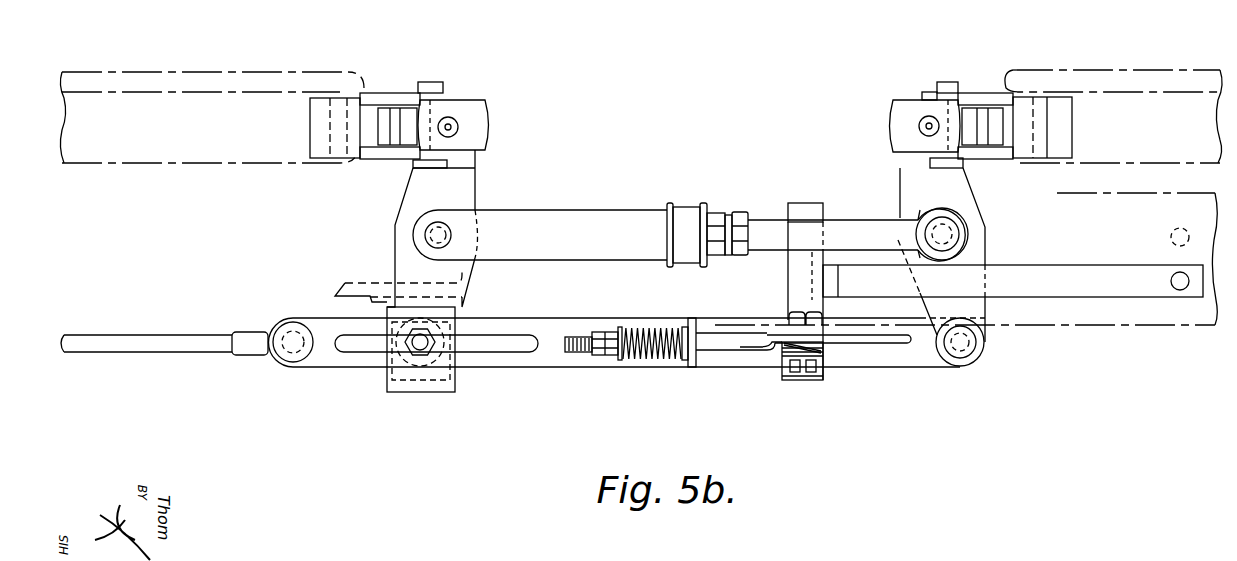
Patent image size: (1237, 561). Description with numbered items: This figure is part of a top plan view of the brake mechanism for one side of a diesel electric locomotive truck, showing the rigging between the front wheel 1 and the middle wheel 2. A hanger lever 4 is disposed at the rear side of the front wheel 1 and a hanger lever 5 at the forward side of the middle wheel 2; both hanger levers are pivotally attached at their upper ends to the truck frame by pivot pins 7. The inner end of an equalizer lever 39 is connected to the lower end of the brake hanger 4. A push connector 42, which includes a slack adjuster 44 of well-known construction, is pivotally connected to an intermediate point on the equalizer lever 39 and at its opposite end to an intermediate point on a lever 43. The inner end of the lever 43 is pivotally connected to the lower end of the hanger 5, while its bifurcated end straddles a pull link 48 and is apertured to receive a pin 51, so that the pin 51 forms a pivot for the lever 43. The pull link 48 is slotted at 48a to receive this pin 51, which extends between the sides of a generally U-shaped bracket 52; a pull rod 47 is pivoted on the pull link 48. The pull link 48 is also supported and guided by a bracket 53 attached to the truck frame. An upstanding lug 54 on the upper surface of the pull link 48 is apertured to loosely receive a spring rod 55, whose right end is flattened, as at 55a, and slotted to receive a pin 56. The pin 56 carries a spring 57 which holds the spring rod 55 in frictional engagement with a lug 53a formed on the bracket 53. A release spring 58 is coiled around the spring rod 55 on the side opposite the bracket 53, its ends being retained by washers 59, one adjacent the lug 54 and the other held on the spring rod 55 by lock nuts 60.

The front wheel 1 is at (1117, 78).
The middle wheel 2 is at (188, 78).
The hanger lever 4 is at (890, 112).
The hanger lever 5 is at (486, 117).
The pivot pin 7 is at (432, 84).
The equalizer lever 39 is at (960, 194).
The push connector 42 is at (850, 232).
The lever 43 is at (478, 192).
The slack adjuster 44 is at (706, 212).
The pull rod 47 is at (152, 347).
The pull link 48 is at (354, 362).
The slot 48a is at (500, 352).
The pin 51 is at (419, 352).
The U-shaped bracket 52 is at (446, 386).
The bracket 53 is at (798, 281).
The lug 53a is at (812, 328).
The upstanding lug 54 is at (691, 368).
The spring rod 55 is at (700, 331).
The flattened end 55a is at (876, 345).
The pin 56 is at (800, 382).
The spring 57 is at (778, 352).
The release spring 58 is at (655, 361).
The washer 59 is at (680, 328).
The lock nuts 60 is at (610, 333).